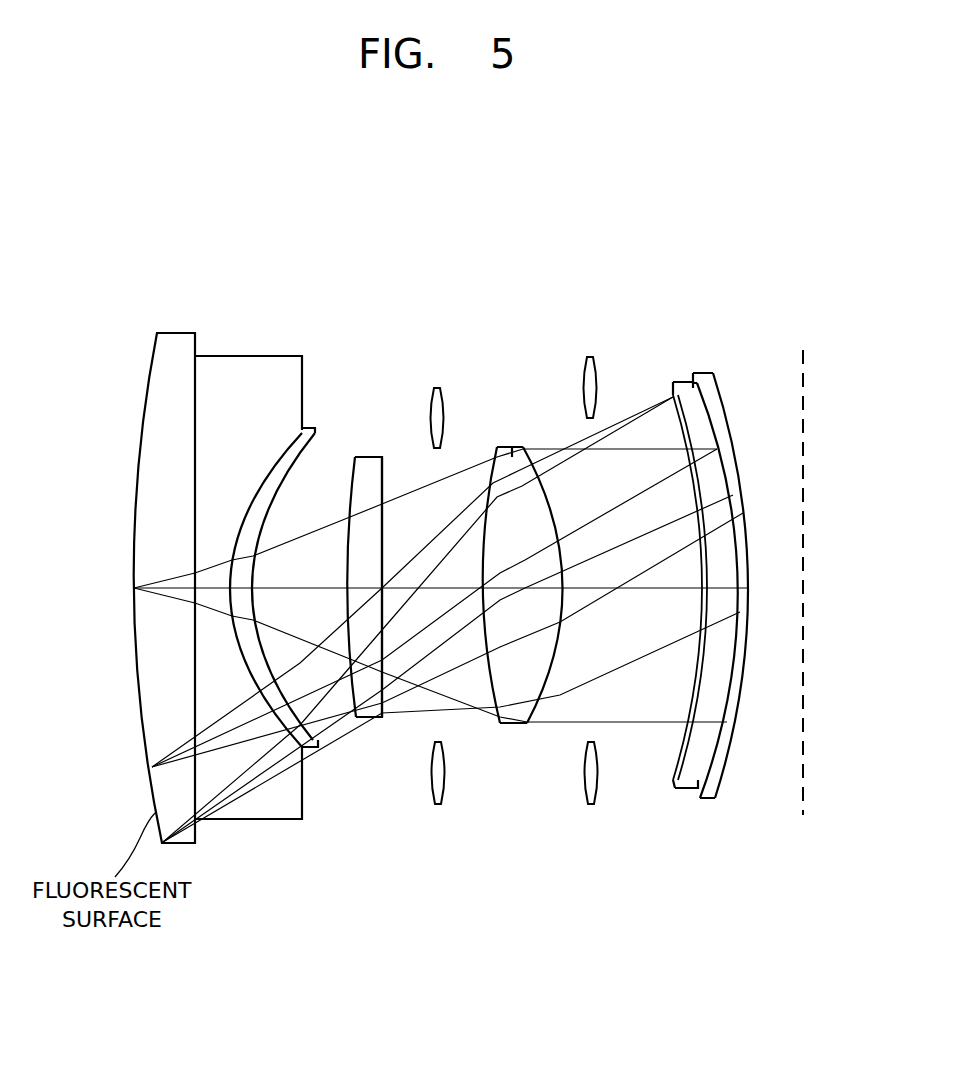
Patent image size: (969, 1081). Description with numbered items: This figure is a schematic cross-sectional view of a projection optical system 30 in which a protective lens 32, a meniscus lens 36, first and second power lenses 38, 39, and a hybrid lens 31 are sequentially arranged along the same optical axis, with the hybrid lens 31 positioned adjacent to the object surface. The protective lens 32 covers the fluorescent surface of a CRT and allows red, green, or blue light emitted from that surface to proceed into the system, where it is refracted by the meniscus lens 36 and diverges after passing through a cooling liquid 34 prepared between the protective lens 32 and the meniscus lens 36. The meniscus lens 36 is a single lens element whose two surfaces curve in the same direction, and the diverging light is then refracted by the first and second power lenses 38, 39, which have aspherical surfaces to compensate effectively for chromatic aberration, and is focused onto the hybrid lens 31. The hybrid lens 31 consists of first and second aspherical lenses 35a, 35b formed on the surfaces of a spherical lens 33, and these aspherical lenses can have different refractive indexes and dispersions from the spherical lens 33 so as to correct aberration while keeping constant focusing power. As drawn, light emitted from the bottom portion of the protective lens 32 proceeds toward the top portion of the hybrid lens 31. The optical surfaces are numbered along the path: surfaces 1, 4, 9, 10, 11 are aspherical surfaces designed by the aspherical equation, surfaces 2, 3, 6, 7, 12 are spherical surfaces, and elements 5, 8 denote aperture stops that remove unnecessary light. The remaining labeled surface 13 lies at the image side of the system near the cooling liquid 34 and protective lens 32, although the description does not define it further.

The aspherical lens surface 1 is at (718, 405).
The spherical lens surface 2 is at (690, 370).
The spherical lens surface 3 is at (680, 387).
The aspherical lens surface 4 is at (673, 397).
The aperture stop 5 is at (590, 805).
The spherical lens surface 6 is at (543, 447).
The spherical lens surface 7 is at (493, 457).
The aperture stop 8 is at (437, 388).
The aspherical lens surface 9 is at (383, 473).
The aspherical lens surface 10 is at (353, 480).
The aspherical lens surface 11 is at (289, 474).
The spherical lens surface 12 is at (305, 425).
The thirteenth lens surface 13 is at (197, 832).
The projection optical system 30 is at (779, 785).
The hybrid lens 31 is at (718, 268).
The protective lens 32 is at (175, 340).
The spherical lens 33 is at (651, 540).
The cooling liquid 34 is at (253, 366).
The first aspherical lens 35a is at (651, 555).
The second aspherical lens 35b is at (729, 547).
The meniscus lens 36 is at (302, 546).
The first power lens 38 is at (367, 559).
The second power lens 39 is at (510, 552).